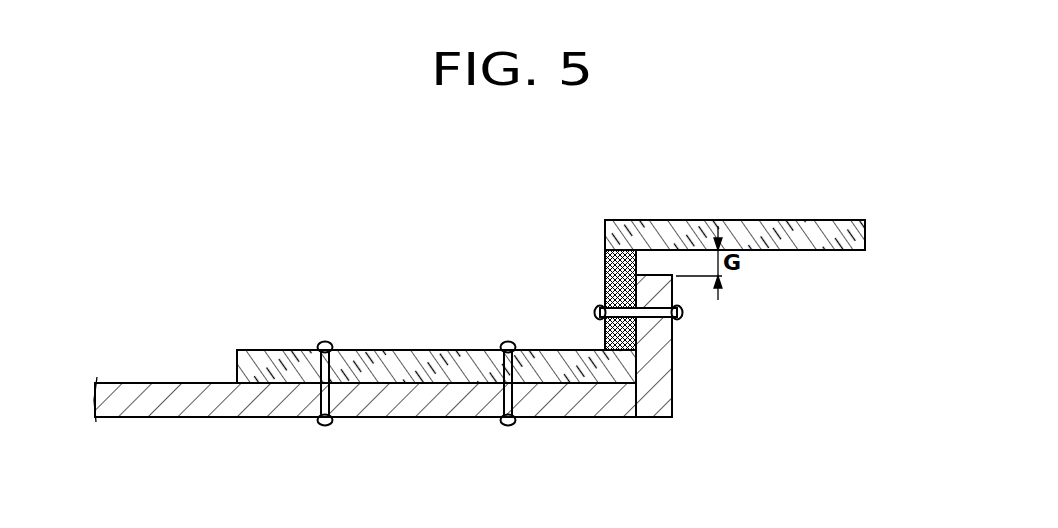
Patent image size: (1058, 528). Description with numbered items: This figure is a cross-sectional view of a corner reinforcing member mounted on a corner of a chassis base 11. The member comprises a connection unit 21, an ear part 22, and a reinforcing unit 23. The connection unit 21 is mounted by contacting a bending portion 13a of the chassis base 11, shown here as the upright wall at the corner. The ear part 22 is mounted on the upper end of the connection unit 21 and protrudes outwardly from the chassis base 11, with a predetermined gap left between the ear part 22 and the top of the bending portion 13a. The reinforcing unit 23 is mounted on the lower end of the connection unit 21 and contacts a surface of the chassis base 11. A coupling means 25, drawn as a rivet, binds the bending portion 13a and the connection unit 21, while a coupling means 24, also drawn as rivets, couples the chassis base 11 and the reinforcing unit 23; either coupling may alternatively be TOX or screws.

The chassis base 11 is at (620, 404).
The bending portion 13a is at (672, 383).
The connection unit 21 is at (603, 270).
The ear part 22 is at (800, 220).
The reinforcing unit 23 is at (397, 349).
The coupling means 24 is at (507, 342).
The coupling means 25 is at (683, 316).